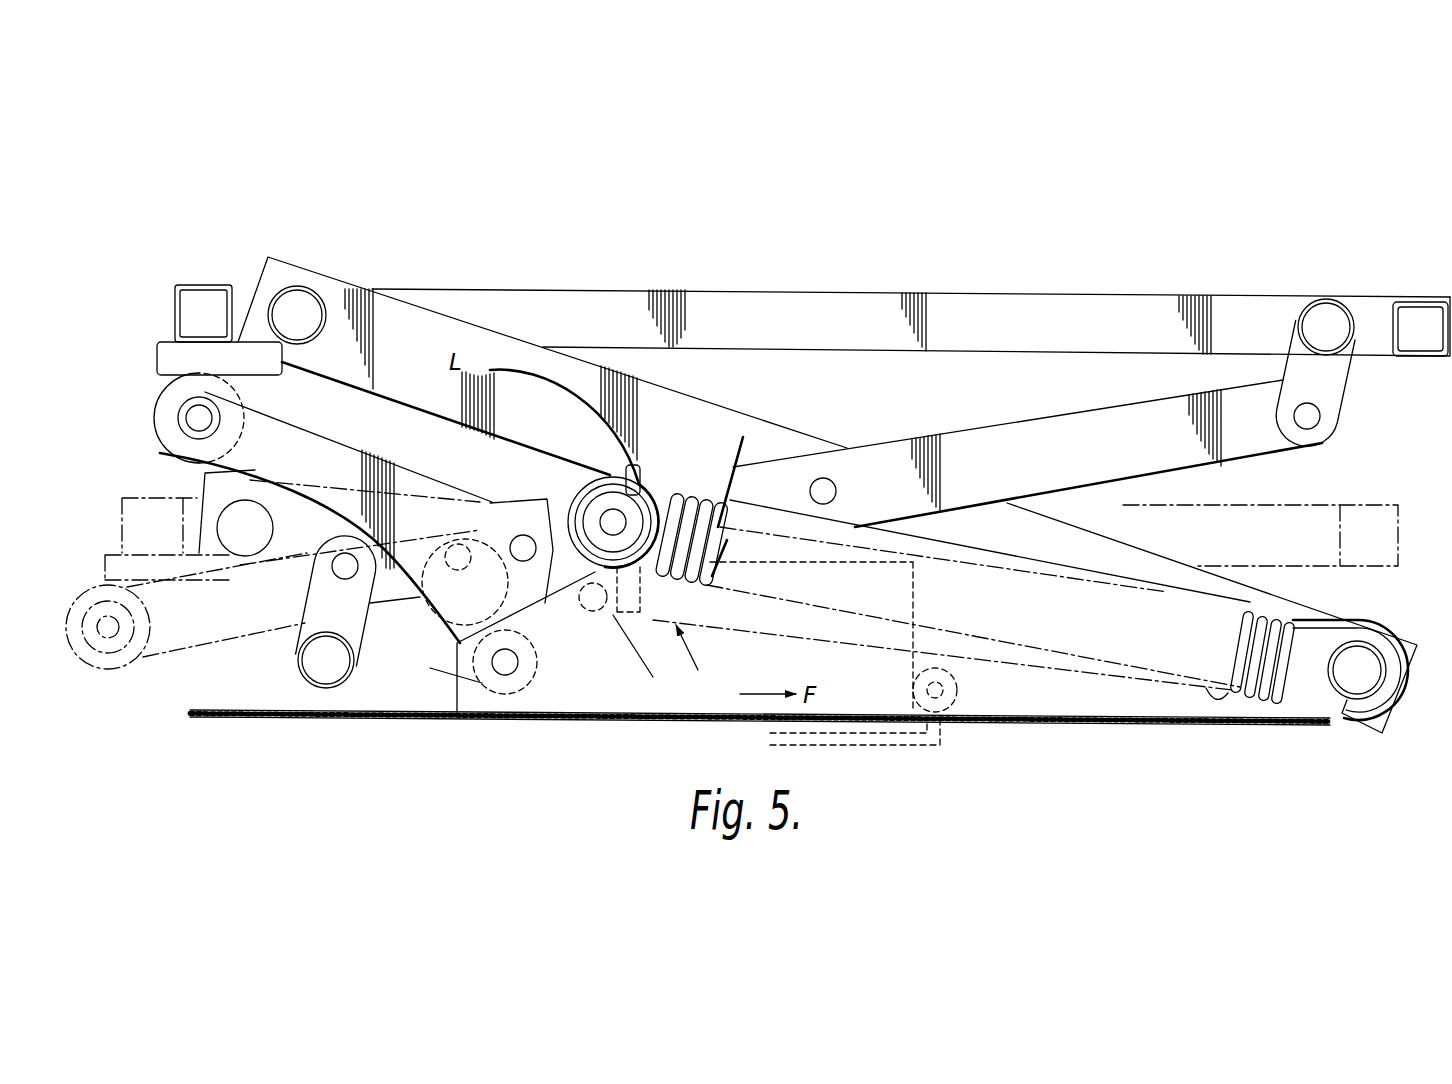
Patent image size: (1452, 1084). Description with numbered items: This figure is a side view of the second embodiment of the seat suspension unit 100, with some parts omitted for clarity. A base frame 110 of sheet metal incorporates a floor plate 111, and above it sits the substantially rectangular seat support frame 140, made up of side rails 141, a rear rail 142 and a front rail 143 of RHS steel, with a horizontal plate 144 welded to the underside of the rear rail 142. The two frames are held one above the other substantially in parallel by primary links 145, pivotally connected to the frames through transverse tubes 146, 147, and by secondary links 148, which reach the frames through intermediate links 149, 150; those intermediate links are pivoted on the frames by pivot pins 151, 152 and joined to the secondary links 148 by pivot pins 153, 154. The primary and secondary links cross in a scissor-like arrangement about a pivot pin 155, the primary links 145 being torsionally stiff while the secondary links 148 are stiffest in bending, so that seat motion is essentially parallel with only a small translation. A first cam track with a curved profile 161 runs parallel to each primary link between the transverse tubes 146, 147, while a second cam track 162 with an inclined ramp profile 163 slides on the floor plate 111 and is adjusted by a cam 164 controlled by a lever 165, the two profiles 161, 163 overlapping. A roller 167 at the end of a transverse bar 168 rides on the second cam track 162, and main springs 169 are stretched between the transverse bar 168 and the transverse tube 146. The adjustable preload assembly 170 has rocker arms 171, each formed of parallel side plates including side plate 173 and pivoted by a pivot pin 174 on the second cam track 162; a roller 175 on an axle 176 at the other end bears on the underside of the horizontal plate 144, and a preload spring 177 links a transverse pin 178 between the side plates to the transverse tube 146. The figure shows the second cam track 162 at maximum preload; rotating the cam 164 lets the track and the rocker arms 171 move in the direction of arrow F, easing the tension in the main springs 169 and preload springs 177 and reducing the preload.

The seat suspension unit 100 is at (1185, 255).
The base frame 110 is at (607, 743).
The floor plate 111 is at (1032, 722).
The seat support frame 140 is at (955, 290).
The side rails 141 is at (557, 288).
The rear rail 142 is at (200, 285).
The front rail 143 is at (1418, 300).
The horizontal plate 144 is at (157, 353).
The primary links 145 is at (362, 285).
The transverse tube 146 is at (1377, 650).
The transverse tube 147 is at (307, 287).
The secondary links 148 is at (1043, 455).
The intermediate link 149 is at (300, 643).
The intermediate link 150 is at (606, 404).
The pivot pin 151 is at (330, 690).
The pivot pin 152 is at (1328, 298).
The pivot pin 153 is at (342, 558).
The pivot pin 154 is at (1307, 418).
The pivot pin 155 is at (842, 480).
The curved profile 161 is at (560, 393).
The second cam track 162 is at (455, 690).
The inclined ramp profile 163 is at (538, 618).
The cam 164 is at (958, 690).
The lever 165 is at (920, 750).
The roller 167 is at (575, 492).
The transverse bar 168 is at (632, 468).
The main springs 169 is at (700, 485).
The adjustable preload assembly 170 is at (165, 458).
The rocker arms 171 is at (309, 419).
The side plate 173 is at (306, 460).
The pivot pin 174 is at (518, 673).
The roller 175 is at (152, 416).
The axle 176 is at (187, 412).
The preload spring 177 is at (1280, 703).
The transverse pin 178 is at (520, 545).